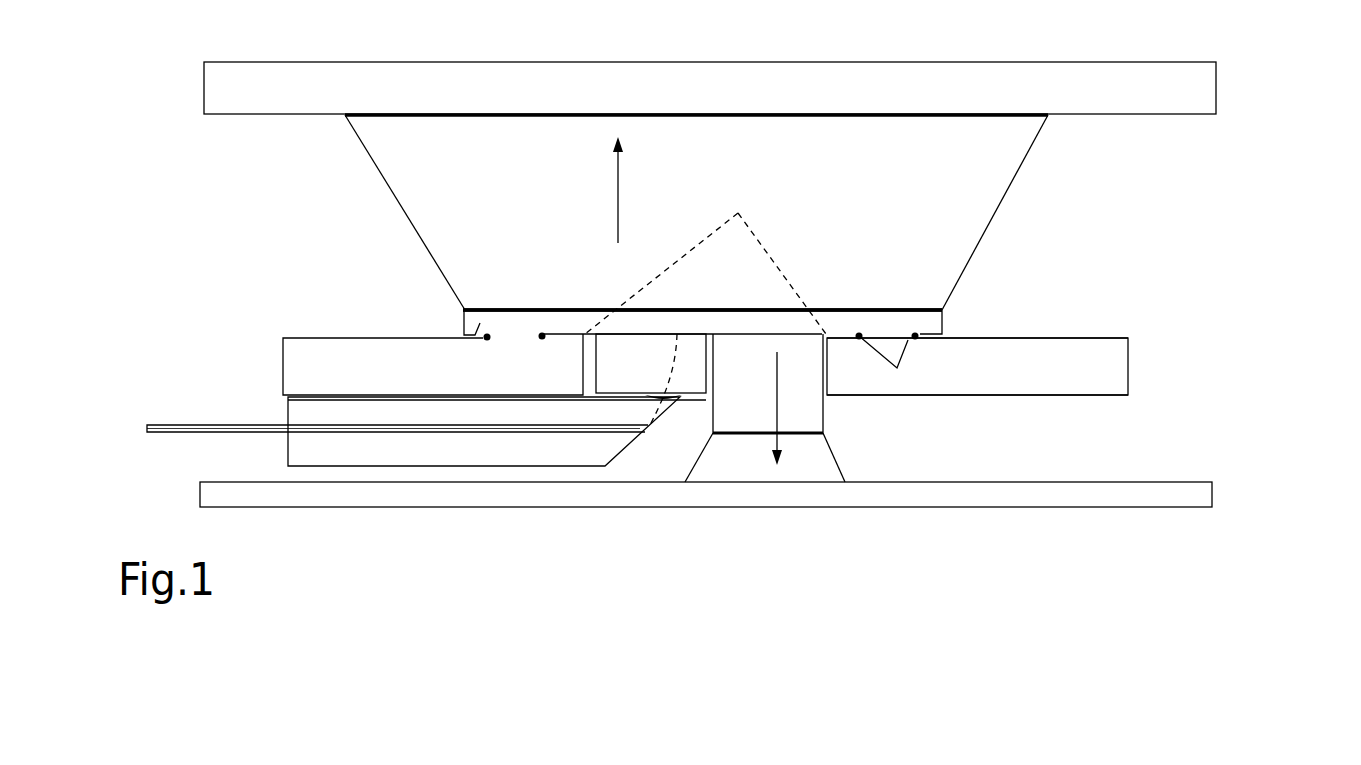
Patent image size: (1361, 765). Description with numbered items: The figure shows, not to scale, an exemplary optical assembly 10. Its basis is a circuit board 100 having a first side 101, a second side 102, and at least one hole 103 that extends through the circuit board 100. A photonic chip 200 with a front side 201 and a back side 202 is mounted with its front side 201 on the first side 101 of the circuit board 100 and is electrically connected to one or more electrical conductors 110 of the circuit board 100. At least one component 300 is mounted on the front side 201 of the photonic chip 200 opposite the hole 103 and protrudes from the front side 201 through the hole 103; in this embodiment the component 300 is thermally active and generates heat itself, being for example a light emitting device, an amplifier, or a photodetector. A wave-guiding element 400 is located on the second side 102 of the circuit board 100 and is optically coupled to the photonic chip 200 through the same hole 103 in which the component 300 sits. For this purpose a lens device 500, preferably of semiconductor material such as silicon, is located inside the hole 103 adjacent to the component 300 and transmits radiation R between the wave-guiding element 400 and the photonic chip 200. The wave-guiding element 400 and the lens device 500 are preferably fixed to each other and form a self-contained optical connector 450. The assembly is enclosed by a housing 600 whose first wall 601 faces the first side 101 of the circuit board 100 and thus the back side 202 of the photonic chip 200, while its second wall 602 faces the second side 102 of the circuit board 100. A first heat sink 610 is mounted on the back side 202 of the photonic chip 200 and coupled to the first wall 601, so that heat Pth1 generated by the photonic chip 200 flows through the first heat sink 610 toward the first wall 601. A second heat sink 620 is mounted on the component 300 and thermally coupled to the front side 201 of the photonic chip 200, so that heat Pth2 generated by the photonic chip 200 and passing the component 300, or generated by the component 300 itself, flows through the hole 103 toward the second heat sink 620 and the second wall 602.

The optical assembly 10 is at (191, 242).
The circuit board 100 is at (1115, 365).
The first side 101 is at (1082, 338).
The second side 102 is at (1083, 395).
The hole 103 is at (705, 257).
The electrical conductors 110 is at (907, 368).
The photonic chip 200 is at (643, 299).
The front side 201 is at (480, 323).
The back side 202 is at (520, 290).
The component 300 is at (800, 400).
The wave-guiding element 400 is at (310, 418).
The optical connector 450 is at (656, 451).
The lens device 500 is at (620, 353).
The housing 600 is at (774, 284).
The first wall 601 is at (285, 93).
The second wall 602 is at (1027, 493).
The first heat sink 610 is at (442, 221).
The second heat sink 620 is at (827, 465).
The radiation R is at (665, 377).
The heat Pth1 is at (652, 190).
The heat Pth2 is at (751, 408).